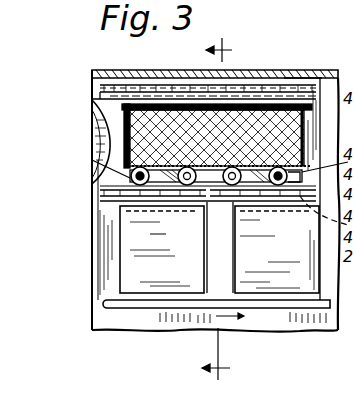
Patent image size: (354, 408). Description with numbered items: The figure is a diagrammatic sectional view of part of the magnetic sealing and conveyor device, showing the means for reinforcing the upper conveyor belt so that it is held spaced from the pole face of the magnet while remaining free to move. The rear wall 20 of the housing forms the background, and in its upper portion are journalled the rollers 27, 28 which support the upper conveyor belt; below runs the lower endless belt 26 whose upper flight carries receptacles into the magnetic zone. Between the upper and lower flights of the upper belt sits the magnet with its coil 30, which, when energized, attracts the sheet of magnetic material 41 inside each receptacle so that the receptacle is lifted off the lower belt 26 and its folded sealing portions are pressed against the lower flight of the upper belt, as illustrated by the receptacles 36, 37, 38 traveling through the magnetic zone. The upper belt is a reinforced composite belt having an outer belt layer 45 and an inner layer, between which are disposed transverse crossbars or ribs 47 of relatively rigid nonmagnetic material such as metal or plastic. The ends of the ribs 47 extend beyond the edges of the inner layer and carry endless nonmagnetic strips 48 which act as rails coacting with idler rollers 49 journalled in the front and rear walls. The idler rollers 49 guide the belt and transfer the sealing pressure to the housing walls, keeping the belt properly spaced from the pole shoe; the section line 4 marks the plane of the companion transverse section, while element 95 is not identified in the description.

The section line 4 is at (223, 209).
The rear wall 20 is at (100, 262).
The endless belt 26 is at (128, 306).
The roller 27 is at (88, 118).
The roller 28 is at (292, 78).
The coil 30 is at (126, 136).
The receptacle 36 is at (162, 249).
The receptacle 37 is at (277, 249).
The receptacle 38 is at (128, 180).
The sheet of magnetic material 41 is at (168, 210).
The outer belt layer 45 is at (156, 90).
The transverse crossbars or ribs 47 is at (258, 96).
The endless nonmagnetic strips 48 is at (92, 98).
The idler rollers 49 is at (95, 163).
The shelf 95 is at (100, 205).